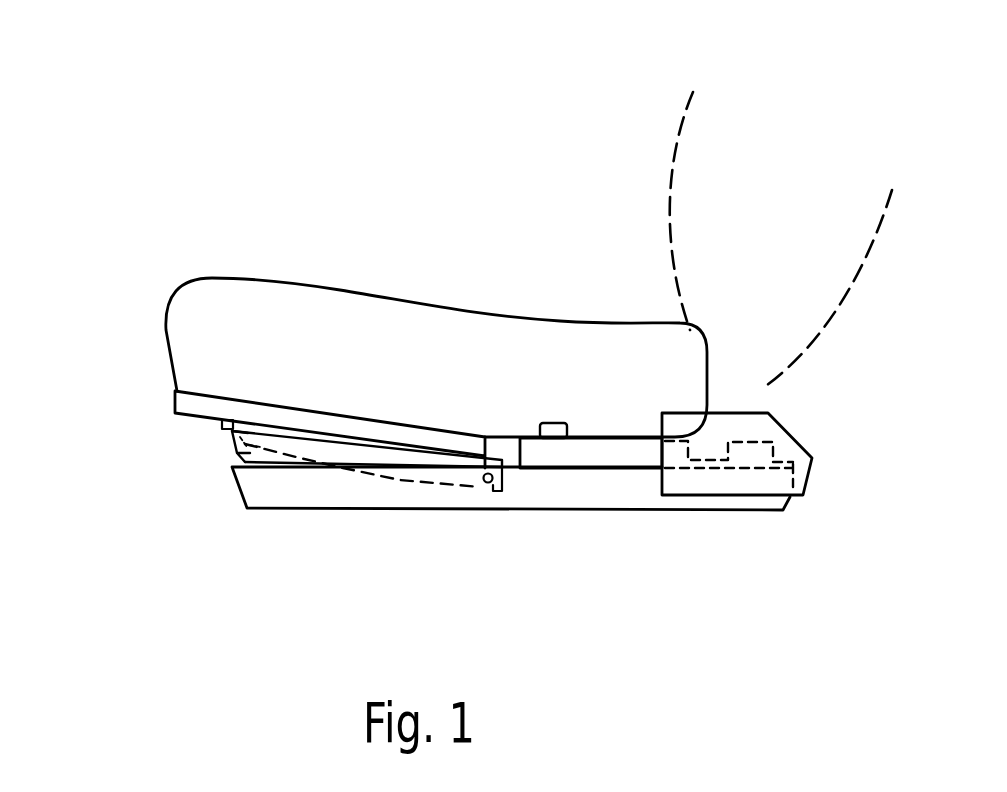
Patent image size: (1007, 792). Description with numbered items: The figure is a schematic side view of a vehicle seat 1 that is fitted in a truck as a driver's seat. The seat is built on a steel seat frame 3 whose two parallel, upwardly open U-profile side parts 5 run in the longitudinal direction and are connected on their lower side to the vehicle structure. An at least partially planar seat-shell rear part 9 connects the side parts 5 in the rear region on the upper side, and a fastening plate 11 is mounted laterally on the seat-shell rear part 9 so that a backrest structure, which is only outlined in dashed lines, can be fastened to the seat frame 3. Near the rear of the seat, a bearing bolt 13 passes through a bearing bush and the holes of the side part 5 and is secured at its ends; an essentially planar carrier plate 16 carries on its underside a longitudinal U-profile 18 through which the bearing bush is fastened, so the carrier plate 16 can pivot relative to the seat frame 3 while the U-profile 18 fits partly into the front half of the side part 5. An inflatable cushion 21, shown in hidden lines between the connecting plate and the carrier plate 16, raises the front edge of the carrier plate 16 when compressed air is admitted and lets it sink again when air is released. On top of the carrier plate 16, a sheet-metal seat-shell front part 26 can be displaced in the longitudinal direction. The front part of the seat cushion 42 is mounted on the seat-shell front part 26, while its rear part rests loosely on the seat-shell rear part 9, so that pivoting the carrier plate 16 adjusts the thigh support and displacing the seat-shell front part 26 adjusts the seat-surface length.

The vehicle seat 1 is at (383, 203).
The seat frame 3 is at (232, 496).
The side part 5 is at (530, 490).
The seat-shell rear part 9 is at (597, 453).
The fastening plate 11 is at (803, 467).
The bearing bolt 13 is at (487, 483).
The carrier plate 16 is at (228, 427).
The U-profile 18 is at (237, 442).
The inflatable cushion 21 is at (233, 453).
The seat-shell front part 26 is at (193, 405).
The seat cushion 42 is at (482, 372).